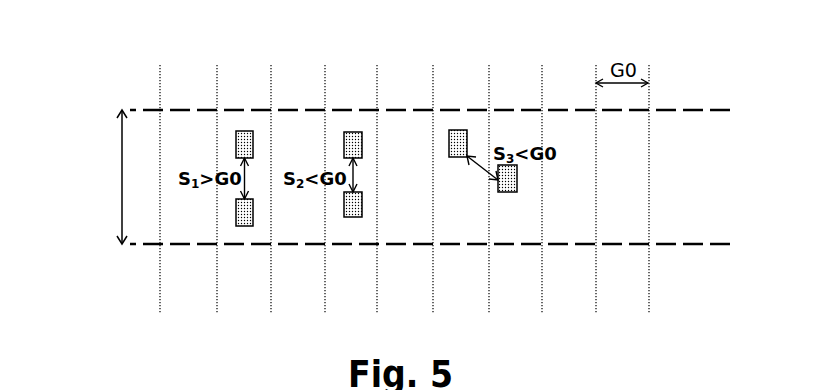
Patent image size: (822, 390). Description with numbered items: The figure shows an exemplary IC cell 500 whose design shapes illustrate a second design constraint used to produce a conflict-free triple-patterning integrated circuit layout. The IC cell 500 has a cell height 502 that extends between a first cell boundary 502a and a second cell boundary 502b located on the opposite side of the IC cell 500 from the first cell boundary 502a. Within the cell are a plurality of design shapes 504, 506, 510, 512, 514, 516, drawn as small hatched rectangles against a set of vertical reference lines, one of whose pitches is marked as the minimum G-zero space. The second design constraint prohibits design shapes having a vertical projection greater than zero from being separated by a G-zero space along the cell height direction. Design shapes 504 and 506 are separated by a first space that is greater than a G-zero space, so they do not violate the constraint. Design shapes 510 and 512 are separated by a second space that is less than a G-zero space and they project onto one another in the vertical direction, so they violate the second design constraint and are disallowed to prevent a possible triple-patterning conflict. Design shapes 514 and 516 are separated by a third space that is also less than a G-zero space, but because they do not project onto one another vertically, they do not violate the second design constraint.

The IC cell 500 is at (97, 21).
The cell height 502 is at (101, 177).
The first cell boundary 502a is at (720, 110).
The second cell boundary 502b is at (720, 244).
The design shape 504 is at (253, 143).
The design shape 506 is at (253, 210).
The design shape 510 is at (362, 143).
The design shape 512 is at (362, 202).
The design shape 514 is at (467, 136).
The design shape 516 is at (517, 178).